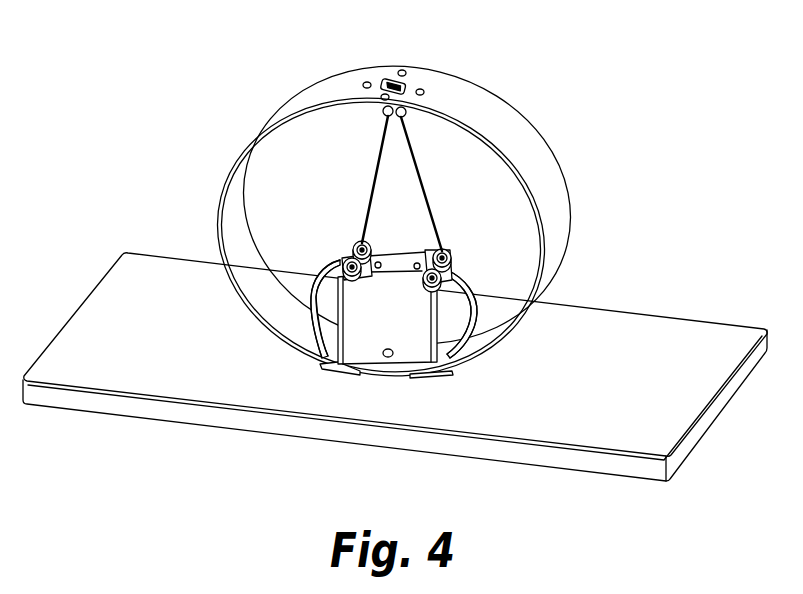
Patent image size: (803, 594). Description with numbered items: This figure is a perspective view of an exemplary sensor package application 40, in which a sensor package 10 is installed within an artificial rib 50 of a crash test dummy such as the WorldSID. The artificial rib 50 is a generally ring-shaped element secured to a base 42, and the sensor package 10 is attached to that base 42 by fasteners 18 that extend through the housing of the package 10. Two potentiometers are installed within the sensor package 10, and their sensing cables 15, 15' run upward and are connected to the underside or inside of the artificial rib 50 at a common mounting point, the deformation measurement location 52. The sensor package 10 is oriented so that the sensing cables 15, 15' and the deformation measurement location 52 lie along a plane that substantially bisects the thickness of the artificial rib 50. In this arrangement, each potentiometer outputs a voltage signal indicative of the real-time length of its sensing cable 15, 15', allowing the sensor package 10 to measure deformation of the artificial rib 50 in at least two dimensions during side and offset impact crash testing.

The sensor package application 40 is at (395, 254).
The base 42 is at (606, 328).
The artificial rib 50 is at (394, 219).
The deformation measurement location 52 is at (405, 74).
The sensor package 10 is at (419, 287).
The fasteners 18 is at (447, 253).
The sensing cable 15 is at (341, 179).
The sensing cable 15' is at (444, 184).